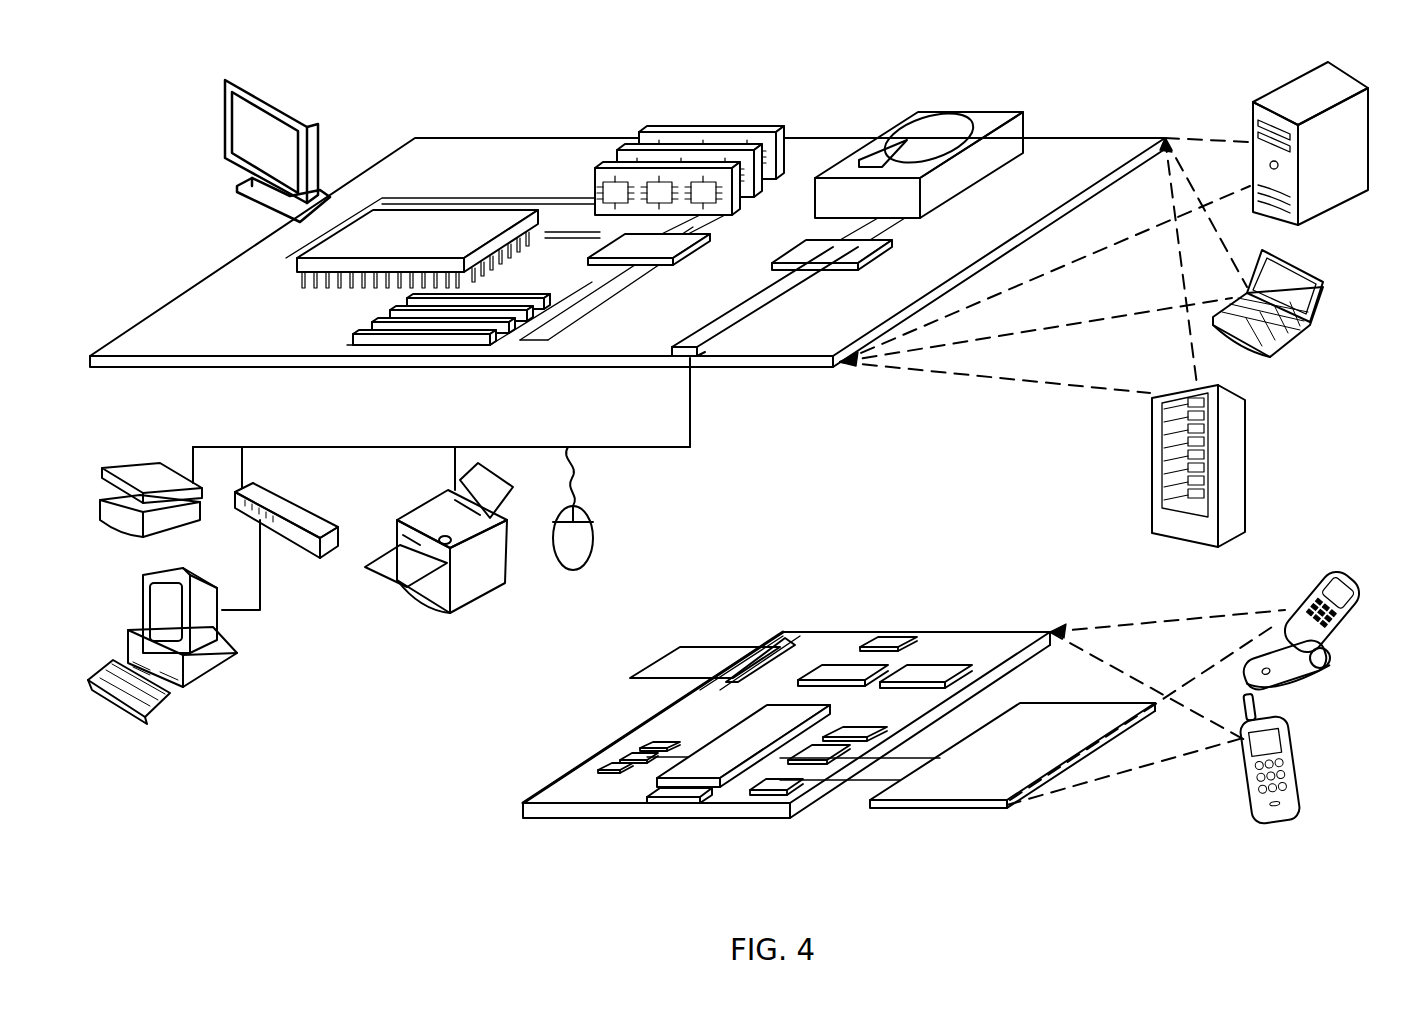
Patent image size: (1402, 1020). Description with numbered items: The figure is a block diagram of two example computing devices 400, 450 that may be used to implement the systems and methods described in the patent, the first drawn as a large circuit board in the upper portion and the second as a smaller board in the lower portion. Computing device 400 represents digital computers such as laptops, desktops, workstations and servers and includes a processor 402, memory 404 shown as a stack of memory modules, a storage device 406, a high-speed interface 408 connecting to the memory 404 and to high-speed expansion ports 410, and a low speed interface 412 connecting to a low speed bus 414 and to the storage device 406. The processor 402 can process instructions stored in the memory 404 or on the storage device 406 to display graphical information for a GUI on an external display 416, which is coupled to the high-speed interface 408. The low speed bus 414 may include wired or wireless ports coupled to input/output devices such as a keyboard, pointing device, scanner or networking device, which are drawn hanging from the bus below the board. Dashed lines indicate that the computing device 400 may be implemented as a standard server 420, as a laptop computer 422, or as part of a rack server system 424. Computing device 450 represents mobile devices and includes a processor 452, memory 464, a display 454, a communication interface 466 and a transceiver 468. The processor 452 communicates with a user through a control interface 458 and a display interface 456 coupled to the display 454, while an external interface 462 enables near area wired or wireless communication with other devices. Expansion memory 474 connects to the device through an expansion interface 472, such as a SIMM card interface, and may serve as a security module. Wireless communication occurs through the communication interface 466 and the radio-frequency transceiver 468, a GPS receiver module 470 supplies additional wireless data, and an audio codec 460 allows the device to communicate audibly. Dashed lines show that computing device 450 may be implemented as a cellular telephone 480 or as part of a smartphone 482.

The computing device 400 is at (430, 104).
The processor 402 is at (305, 265).
The memory 404 is at (658, 130).
The storage device 406 is at (915, 118).
The high-speed interface 408 is at (625, 243).
The high-speed expansion ports 410 is at (372, 327).
The low speed interface 412 is at (812, 250).
The low speed bus 414 is at (700, 360).
The display 416 is at (232, 88).
The standard server 420 is at (1255, 120).
The laptop computer 422 is at (1322, 286).
The rack server system 424 is at (1152, 492).
The computing device 450 is at (499, 819).
The processor 452 is at (715, 780).
The display 454 is at (972, 792).
The display interface 456 is at (782, 785).
The control interface 458 is at (815, 757).
The audio codec 460 is at (848, 735).
The external interface 462 is at (677, 798).
The memory 464 is at (615, 770).
The communication interface 466 is at (840, 673).
The transceiver 468 is at (928, 670).
The GPS receiver module 470 is at (882, 643).
The expansion interface 472 is at (758, 648).
The expansion memory 474 is at (693, 648).
The cellular telephone 480 is at (1302, 595).
The smartphone 482 is at (1245, 775).